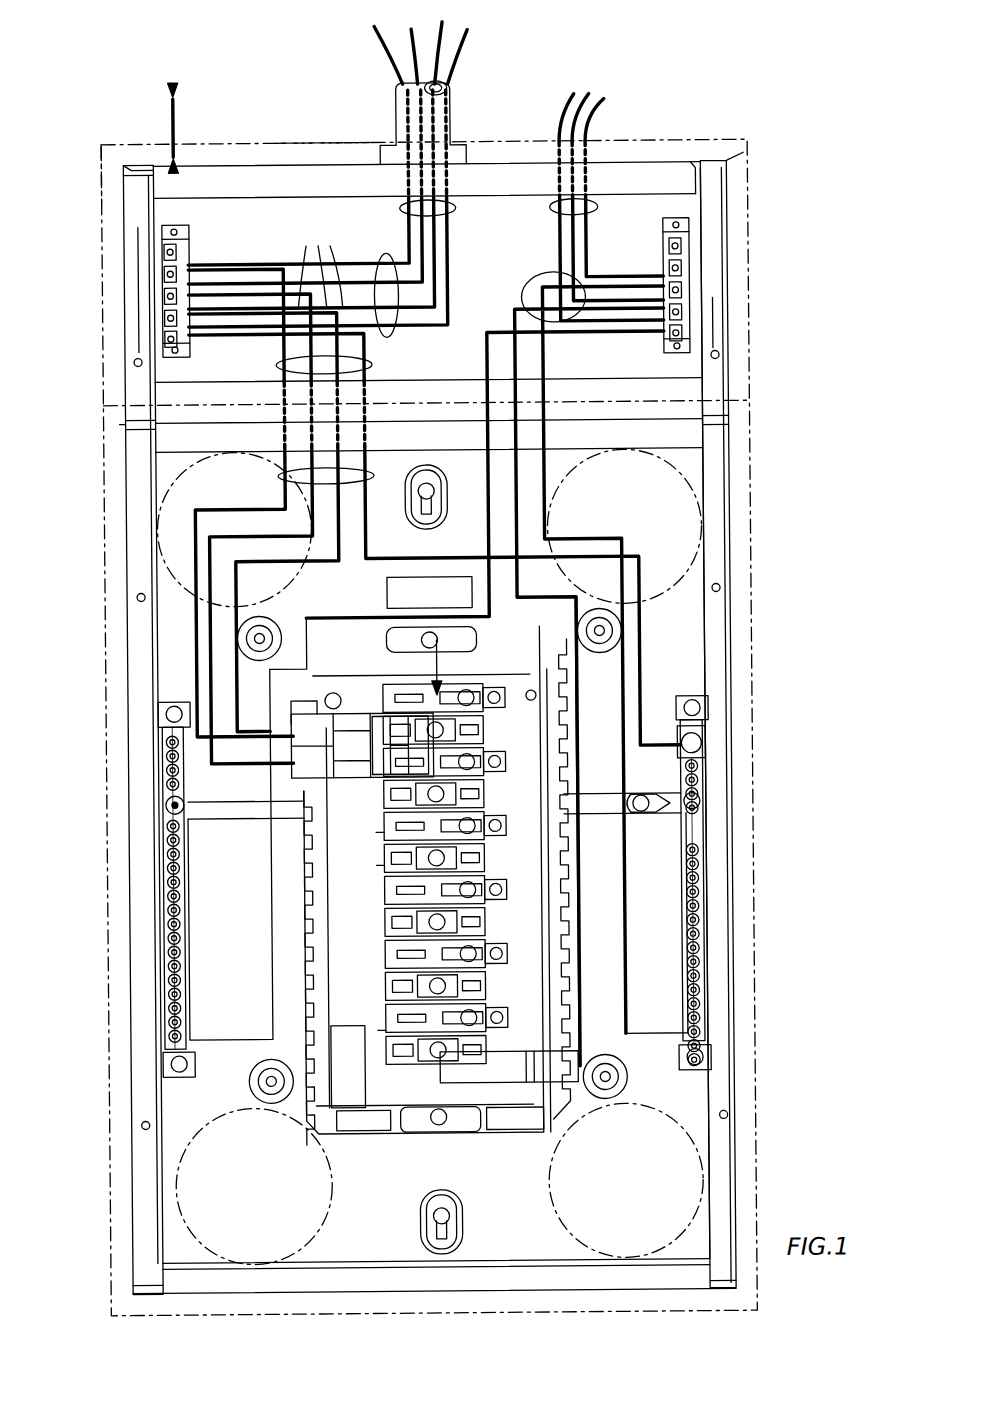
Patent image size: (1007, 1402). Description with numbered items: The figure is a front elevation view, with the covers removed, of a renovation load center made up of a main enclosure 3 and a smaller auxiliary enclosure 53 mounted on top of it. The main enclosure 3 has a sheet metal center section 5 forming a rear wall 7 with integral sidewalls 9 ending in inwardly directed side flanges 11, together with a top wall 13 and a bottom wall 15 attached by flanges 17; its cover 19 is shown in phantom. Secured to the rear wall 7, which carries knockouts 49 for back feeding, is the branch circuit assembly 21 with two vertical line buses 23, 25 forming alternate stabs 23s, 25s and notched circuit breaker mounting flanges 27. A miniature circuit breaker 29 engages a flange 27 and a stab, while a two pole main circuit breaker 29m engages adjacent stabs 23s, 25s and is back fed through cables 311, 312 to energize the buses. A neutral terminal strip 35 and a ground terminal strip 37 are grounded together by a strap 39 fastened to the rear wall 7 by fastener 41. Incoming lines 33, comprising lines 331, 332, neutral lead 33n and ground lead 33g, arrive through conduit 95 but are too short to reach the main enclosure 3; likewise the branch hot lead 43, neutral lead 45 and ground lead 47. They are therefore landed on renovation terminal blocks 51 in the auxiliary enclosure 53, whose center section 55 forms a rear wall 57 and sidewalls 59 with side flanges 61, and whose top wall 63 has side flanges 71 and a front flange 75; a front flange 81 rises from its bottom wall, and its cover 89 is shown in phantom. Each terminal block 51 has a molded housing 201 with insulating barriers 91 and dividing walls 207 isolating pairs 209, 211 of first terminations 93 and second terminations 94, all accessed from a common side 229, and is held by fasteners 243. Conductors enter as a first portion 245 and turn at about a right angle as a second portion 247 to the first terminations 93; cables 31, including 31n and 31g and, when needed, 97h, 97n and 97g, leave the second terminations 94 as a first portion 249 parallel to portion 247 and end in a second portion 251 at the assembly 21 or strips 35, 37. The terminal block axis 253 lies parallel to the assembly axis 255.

The main enclosure 3 is at (415, 717).
The center section 5 is at (160, 1108).
The rear wall 7 is at (682, 1098).
The sidewalls 9 is at (128, 690).
The side flanges 11 is at (135, 520).
The top wall 13 is at (735, 420).
The bottom wall 15 is at (680, 1295).
The flanges 17 is at (130, 422).
The cover 19 is at (755, 1085).
The branch circuit assembly 21 is at (295, 1012).
The line bus 23 is at (497, 785).
The stabs 23s is at (390, 830).
The line bus 25 is at (495, 852).
The stabs 25s is at (392, 860).
The circuit breaker mounting flanges 27 is at (302, 905).
The circuit breaker 29 is at (515, 1055).
The main circuit breaker 29m is at (290, 768).
The cables 31 is at (420, 515).
The ground cable 31g is at (260, 505).
The cable 311 is at (195, 545).
The cable 312 is at (310, 560).
The neutral cable 31n is at (645, 682).
The incoming lines 33 is at (377, 102).
The ground lead 33g is at (397, 53).
The line 331 is at (410, 62).
The line 332 is at (454, 32).
The neutral lead 33n is at (454, 72).
The neutral terminal strip 35 is at (699, 773).
The ground terminal strip 37 is at (165, 765).
The strap 39 is at (222, 812).
The fastener 41 is at (648, 798).
The hot lead 43 is at (590, 90).
The neutral lead 45 is at (600, 118).
The ground lead 47 is at (562, 112).
The knockouts 49 is at (195, 455).
The renovation terminal blocks 51 is at (175, 218).
The auxiliary enclosure 53 is at (732, 237).
The center section 55 is at (150, 375).
The rear wall 57 is at (142, 230).
The sidewalls 59 is at (150, 280).
The side flanges 61 is at (128, 328).
The top wall 63 is at (313, 145).
The side flanges 71 is at (728, 160).
The front flange 75 is at (262, 165).
The front flange 81 is at (205, 385).
The cover 89 is at (108, 162).
The insulating barriers 91 is at (194, 252).
The first terminations 93 is at (160, 225).
The second terminations 94 is at (150, 241).
The conduit 95 is at (454, 112).
The cable 97g is at (268, 965).
The cable 97h is at (582, 1010).
The cable 97n is at (660, 883).
The molded housing 201 is at (195, 240).
The dividing walls 207 is at (300, 310).
The pair 209 is at (150, 235).
The pair 211 is at (150, 282).
The common side 229 is at (198, 262).
The fastener 243 is at (180, 224).
The first portion 245 is at (456, 210).
The second portion 247 is at (388, 265).
The first portion 249 is at (320, 263).
The second portion 251 is at (378, 364).
The longitudinal axis 253 is at (175, 125).
The longitudinal axis 255 is at (447, 652).